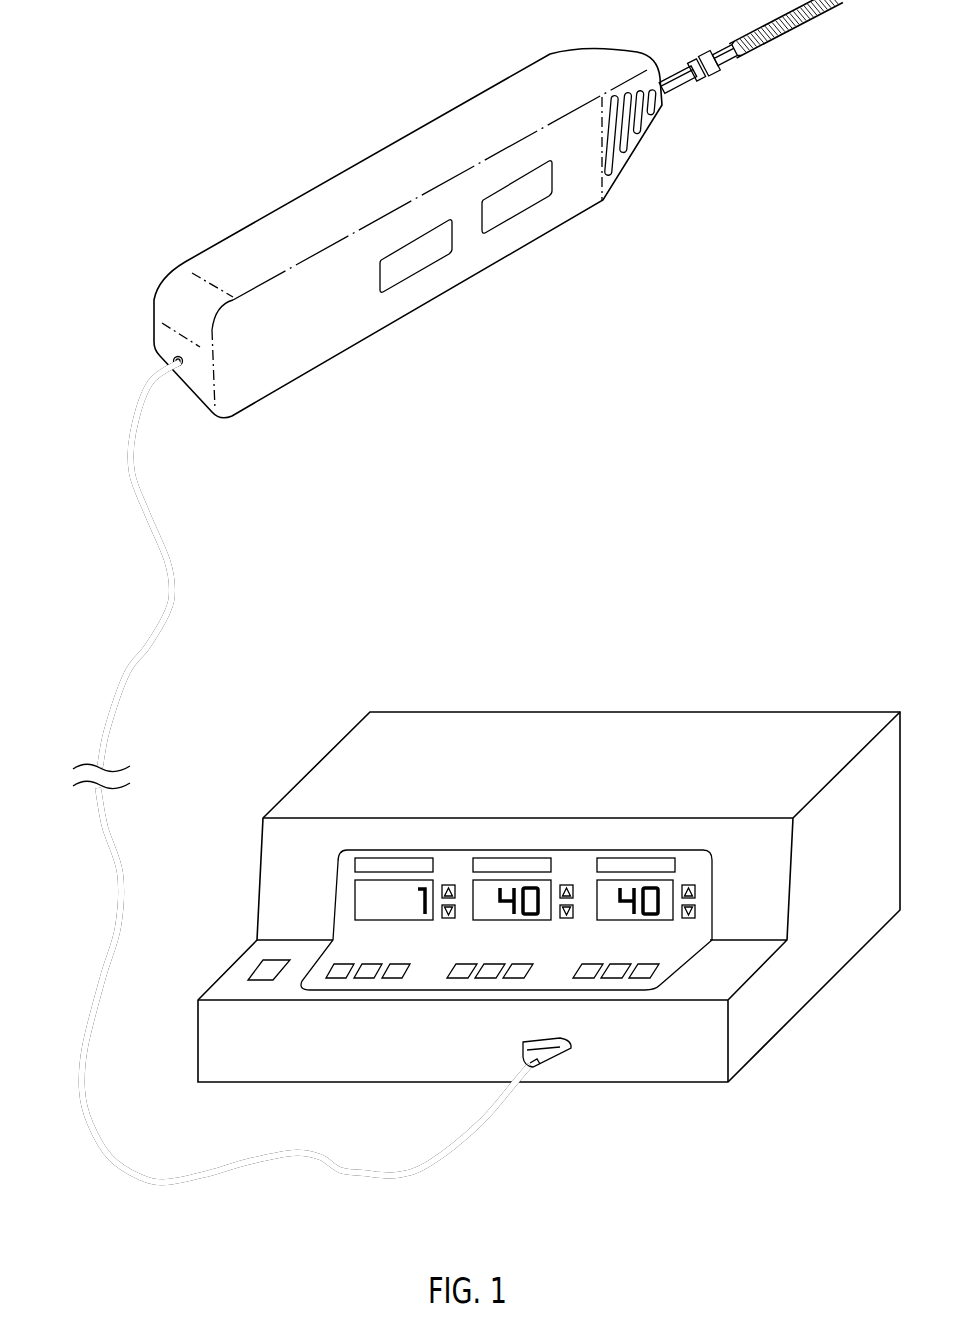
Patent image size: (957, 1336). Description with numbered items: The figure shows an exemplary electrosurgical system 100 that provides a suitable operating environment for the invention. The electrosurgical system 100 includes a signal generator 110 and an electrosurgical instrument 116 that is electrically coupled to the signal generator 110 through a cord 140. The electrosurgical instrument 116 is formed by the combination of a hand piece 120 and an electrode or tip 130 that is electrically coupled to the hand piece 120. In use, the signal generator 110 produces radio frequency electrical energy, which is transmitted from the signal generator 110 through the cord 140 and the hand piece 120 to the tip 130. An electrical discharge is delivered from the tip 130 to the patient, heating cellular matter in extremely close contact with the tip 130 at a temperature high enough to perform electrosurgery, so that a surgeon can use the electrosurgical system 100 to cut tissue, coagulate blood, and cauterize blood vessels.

The electrosurgical system 100 is at (188, 88).
The signal generator 110 is at (710, 725).
The electrosurgical instrument 116 is at (498, 209).
The hand piece 120 is at (518, 233).
The tip 130 is at (775, 28).
The cord 140 is at (160, 613).